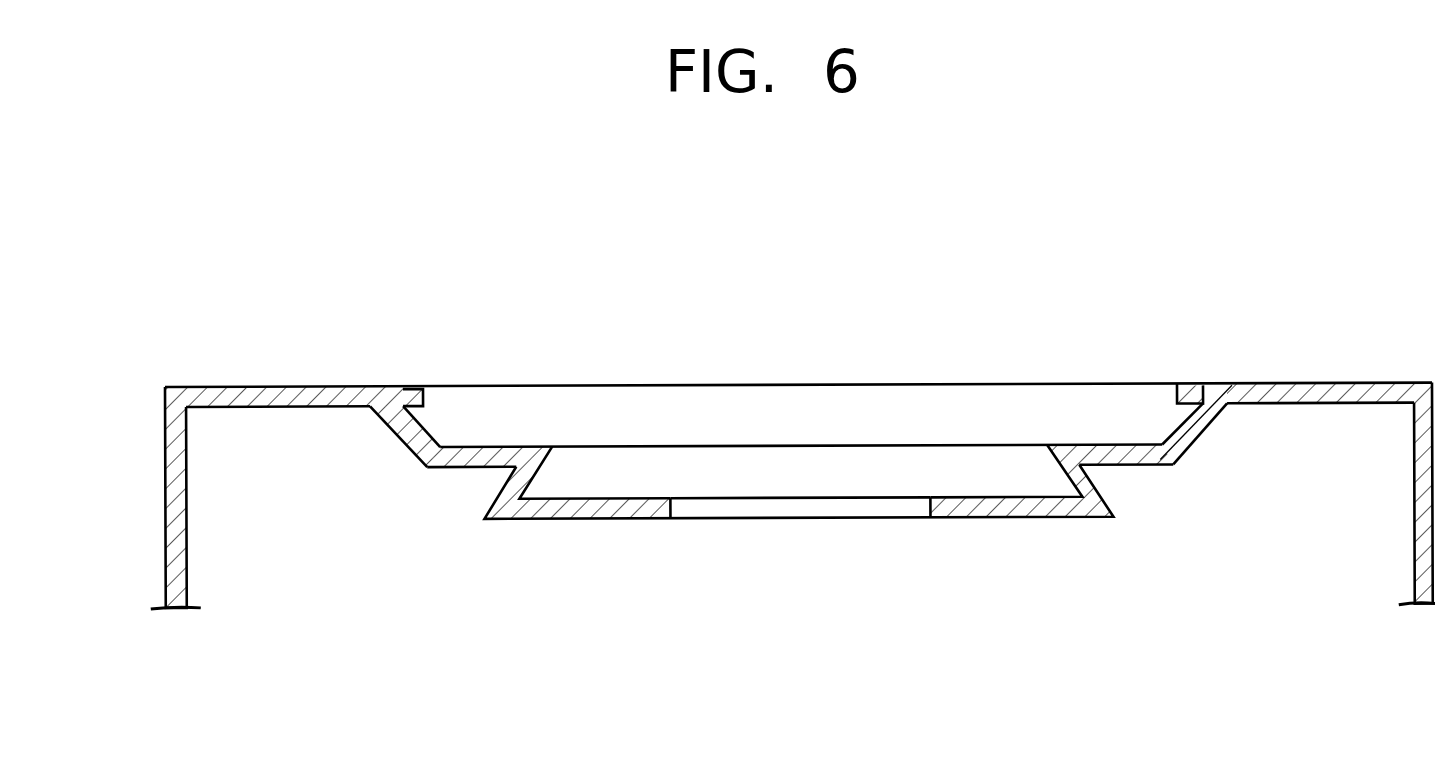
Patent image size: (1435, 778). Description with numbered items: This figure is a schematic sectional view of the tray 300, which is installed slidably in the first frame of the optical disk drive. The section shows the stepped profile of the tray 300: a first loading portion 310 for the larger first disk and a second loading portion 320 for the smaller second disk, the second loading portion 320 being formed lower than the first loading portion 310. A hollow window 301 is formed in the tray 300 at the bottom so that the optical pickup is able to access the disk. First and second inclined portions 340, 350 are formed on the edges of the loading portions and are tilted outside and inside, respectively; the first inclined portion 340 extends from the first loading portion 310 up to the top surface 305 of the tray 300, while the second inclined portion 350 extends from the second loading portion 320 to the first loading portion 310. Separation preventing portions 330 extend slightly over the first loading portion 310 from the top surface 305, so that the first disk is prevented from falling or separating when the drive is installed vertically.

The tray 300 is at (178, 493).
The top surface 305 is at (267, 388).
The separation preventing portion 330 is at (402, 389).
The first inclined portion 340 is at (419, 426).
The second inclined portion 350 is at (540, 471).
The first loading portion 310 is at (1121, 451).
The second loading portion 320 is at (608, 522).
The hollow window 301 is at (794, 510).